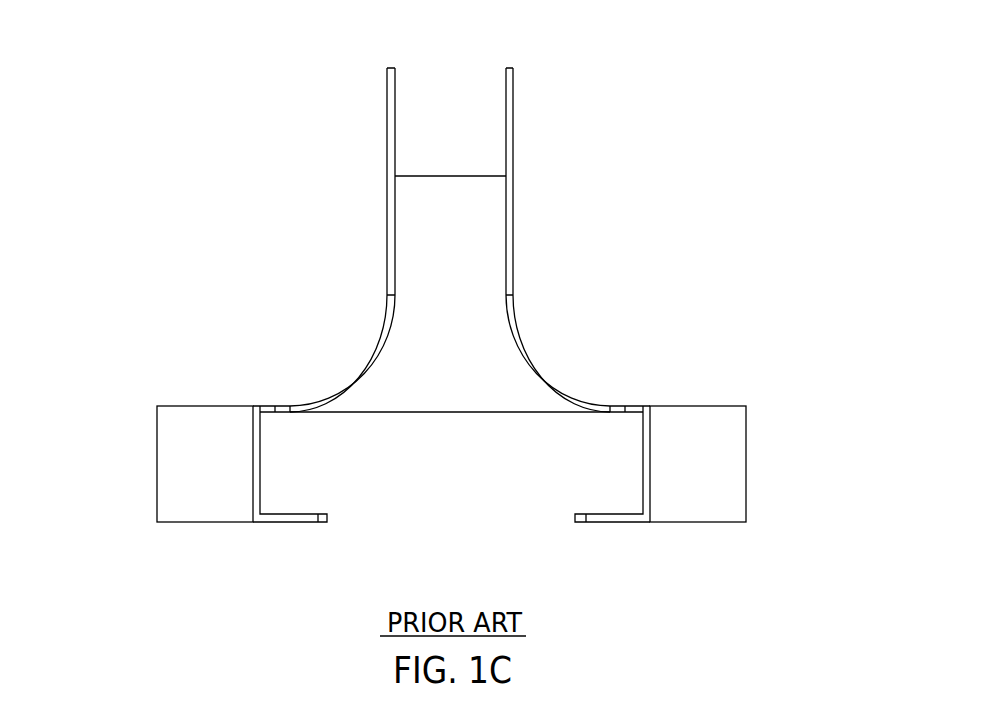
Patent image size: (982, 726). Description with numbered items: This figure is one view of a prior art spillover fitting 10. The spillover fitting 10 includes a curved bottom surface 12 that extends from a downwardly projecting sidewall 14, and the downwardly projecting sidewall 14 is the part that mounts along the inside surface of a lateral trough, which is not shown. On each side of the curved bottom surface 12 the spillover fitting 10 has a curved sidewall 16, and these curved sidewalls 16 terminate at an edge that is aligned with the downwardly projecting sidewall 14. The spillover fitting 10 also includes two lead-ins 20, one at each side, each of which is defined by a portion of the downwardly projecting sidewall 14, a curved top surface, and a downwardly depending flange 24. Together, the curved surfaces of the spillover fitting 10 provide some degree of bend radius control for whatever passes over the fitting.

The spillover fitting 10 is at (563, 107).
The curved bottom surface 12 is at (460, 300).
The downwardly projecting sidewall 14 is at (429, 413).
The curved sidewall 16 is at (354, 385).
The lead-in 20 is at (207, 466).
The downwardly depending flange 24 is at (288, 525).